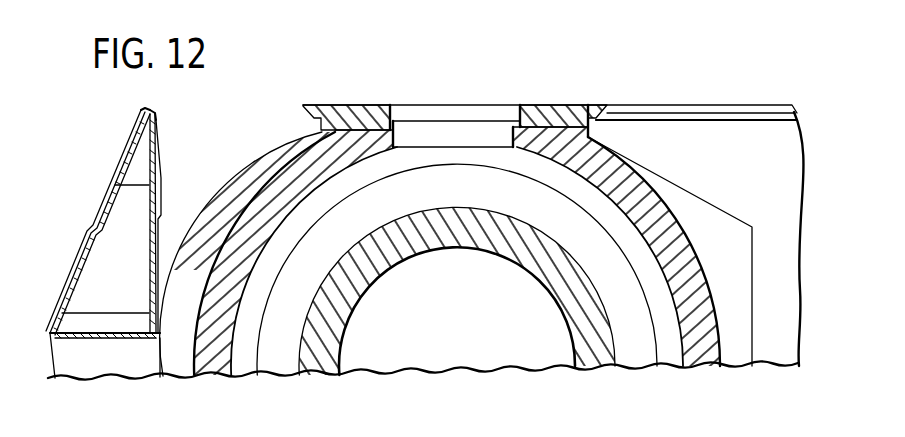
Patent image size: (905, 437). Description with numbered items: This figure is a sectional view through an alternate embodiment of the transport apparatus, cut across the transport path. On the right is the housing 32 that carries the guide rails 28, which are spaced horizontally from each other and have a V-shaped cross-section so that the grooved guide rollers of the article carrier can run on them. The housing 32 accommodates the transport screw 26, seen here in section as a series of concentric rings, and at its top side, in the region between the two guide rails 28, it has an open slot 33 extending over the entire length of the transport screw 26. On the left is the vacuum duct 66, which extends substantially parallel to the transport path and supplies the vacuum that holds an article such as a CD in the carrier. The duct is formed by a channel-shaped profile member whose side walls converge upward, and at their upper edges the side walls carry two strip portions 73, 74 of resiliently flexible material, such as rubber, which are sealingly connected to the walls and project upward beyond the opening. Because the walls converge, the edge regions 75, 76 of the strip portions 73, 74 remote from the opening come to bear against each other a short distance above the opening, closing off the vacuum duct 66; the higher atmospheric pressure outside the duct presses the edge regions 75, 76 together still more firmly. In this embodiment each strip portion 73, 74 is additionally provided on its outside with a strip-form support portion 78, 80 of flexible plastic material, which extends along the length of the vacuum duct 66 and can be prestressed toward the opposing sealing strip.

The transport screw 26 is at (588, 320).
The guide rails 28 is at (338, 113).
The housing 32 is at (667, 243).
The open slot 33 is at (500, 135).
The vacuum duct 66 is at (92, 282).
The strip portion 73 is at (132, 136).
The strip portion 74 is at (157, 140).
The edge region 75 is at (142, 110).
The edge region 76 is at (153, 113).
The support portion 78 is at (120, 155).
The support portion 80 is at (163, 162).